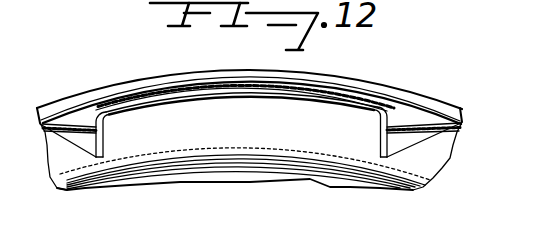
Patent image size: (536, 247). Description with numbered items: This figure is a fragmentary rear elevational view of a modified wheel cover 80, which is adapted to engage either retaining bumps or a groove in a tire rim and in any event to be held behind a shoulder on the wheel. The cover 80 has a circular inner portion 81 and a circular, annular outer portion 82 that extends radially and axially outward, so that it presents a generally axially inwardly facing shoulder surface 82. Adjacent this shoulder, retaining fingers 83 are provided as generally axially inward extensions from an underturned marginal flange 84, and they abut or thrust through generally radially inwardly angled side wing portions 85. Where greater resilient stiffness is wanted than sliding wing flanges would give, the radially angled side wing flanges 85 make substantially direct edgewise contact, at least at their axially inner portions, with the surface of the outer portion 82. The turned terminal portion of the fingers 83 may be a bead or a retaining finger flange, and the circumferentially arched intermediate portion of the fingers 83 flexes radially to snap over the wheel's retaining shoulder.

The cover 80 is at (139, 79).
The circular inner portion 81 is at (350, 187).
The circular annular outer portion 82 is at (247, 148).
The retaining fingers 83 is at (203, 101).
The underturned marginal flange 84 is at (334, 85).
The side wing portions 85 is at (104, 139).